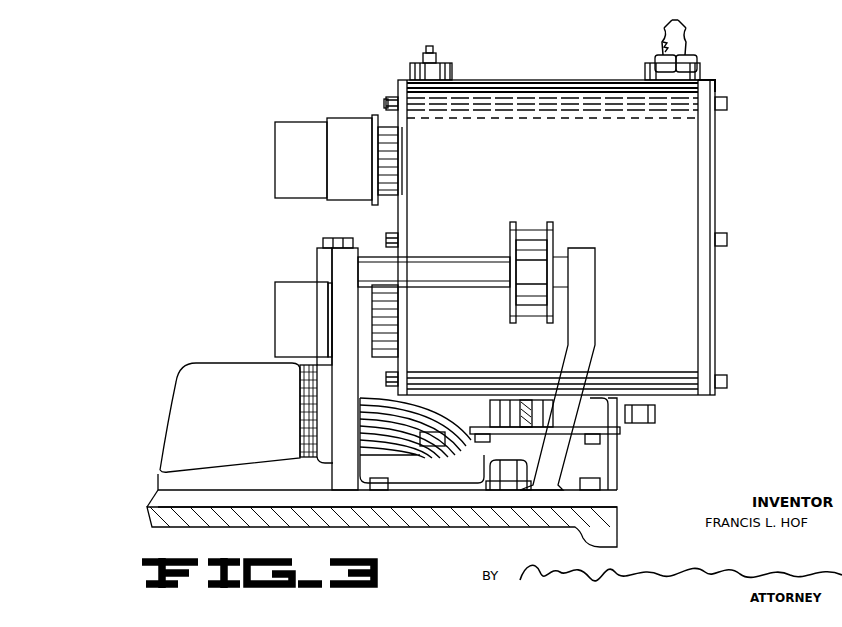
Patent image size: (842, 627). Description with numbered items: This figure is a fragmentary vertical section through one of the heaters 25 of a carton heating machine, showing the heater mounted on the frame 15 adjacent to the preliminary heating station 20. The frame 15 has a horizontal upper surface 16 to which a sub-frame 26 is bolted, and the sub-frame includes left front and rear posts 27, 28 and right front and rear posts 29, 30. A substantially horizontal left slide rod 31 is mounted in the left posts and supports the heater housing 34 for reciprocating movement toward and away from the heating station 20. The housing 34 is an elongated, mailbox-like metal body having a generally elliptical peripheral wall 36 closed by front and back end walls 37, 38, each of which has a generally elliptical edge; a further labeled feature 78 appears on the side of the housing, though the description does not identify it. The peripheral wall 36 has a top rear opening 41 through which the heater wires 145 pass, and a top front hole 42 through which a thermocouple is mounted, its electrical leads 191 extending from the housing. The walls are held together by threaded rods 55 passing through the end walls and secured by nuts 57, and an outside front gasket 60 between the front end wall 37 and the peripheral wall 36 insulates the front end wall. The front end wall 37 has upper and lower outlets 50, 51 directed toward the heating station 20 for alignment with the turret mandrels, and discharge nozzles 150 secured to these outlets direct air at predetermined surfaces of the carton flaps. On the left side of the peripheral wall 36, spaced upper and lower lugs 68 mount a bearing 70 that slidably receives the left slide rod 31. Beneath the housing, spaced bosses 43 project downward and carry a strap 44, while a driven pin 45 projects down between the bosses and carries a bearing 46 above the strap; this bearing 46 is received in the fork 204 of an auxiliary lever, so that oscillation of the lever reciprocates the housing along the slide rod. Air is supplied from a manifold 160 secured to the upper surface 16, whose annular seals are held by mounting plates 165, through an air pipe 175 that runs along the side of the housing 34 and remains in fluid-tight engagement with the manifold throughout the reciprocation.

The frame 15 is at (150, 520).
The horizontal upper surface 16 is at (178, 497).
The preliminary heating station 20 is at (243, 118).
The heater 25 is at (611, 200).
The sub-frame 26 is at (333, 498).
The left front post 27 is at (340, 265).
The left rear post 28 is at (588, 275).
The right front post 29 is at (320, 255).
The right rear post 30 is at (600, 486).
The left slide rod 31 is at (425, 264).
The heater housing 34 is at (520, 80).
The peripheral wall 36 is at (690, 165).
The front end wall 37 is at (399, 78).
The back end wall 38 is at (748, 70).
The top rear opening 41 is at (652, 64).
The top front hole 42 is at (440, 70).
The boss 43 is at (432, 446).
The strap 44 is at (608, 440).
The driven pin 45 is at (560, 462).
The bearing 46 is at (540, 430).
The upper outlet 50 is at (390, 160).
The lower outlet 51 is at (385, 321).
The threaded rod 55 is at (387, 103).
The nut 57 is at (390, 99).
The outside front gasket 60 is at (405, 182).
The lug 68 is at (535, 242).
The bearing 70 is at (525, 280).
The housing bottom band 78 is at (703, 192).
The wire 145 is at (682, 40).
The discharge nozzle 150 is at (292, 158).
The manifold 160 is at (190, 385).
The mounting plate 165 is at (305, 390).
The air pipe 175 is at (372, 418).
The electrical lead 191 is at (430, 52).
The fork 204 is at (493, 427).